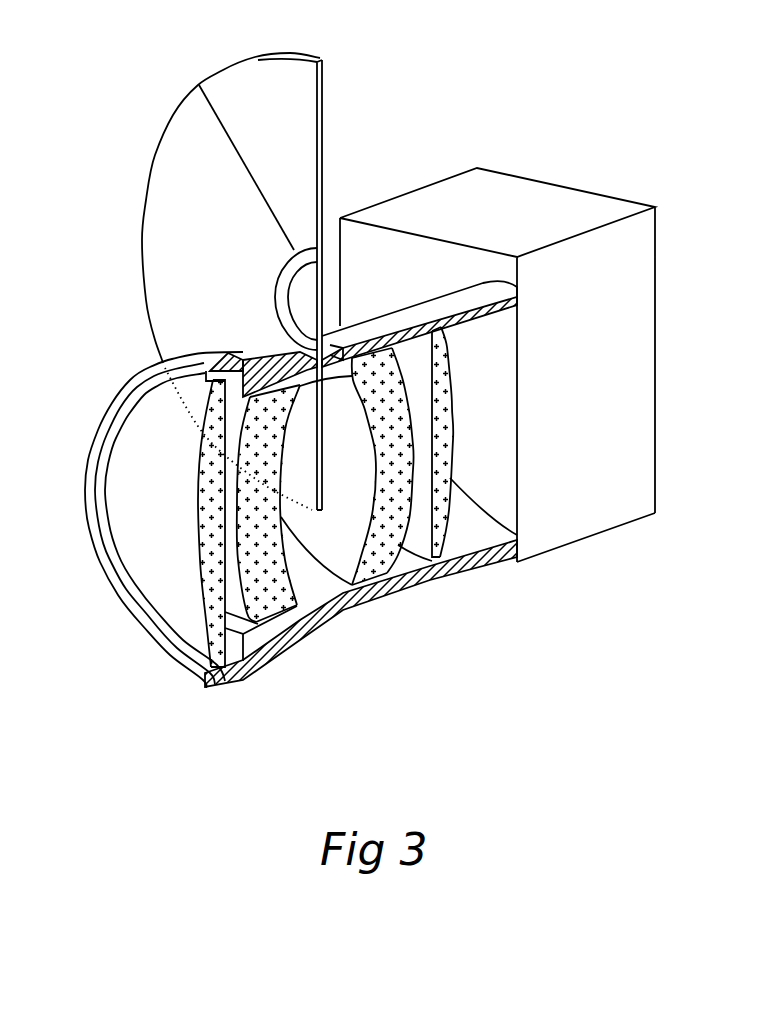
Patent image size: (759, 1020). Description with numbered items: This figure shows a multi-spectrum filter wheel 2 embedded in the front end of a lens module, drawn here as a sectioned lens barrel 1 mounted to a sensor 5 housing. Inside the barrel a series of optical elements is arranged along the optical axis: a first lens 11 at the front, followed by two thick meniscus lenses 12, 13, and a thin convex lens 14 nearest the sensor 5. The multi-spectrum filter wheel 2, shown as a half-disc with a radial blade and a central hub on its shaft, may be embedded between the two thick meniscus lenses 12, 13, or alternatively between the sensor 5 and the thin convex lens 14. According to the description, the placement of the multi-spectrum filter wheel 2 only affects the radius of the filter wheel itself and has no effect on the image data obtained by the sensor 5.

The lens barrel 1 is at (483, 558).
The multi-spectrum filter wheel 2 is at (150, 197).
The sensor 5 is at (597, 512).
The first lens 11 is at (202, 540).
The thick meniscus lens 12 is at (273, 583).
The thick meniscus lens 13 is at (370, 563).
The thin convex lens 14 is at (444, 482).